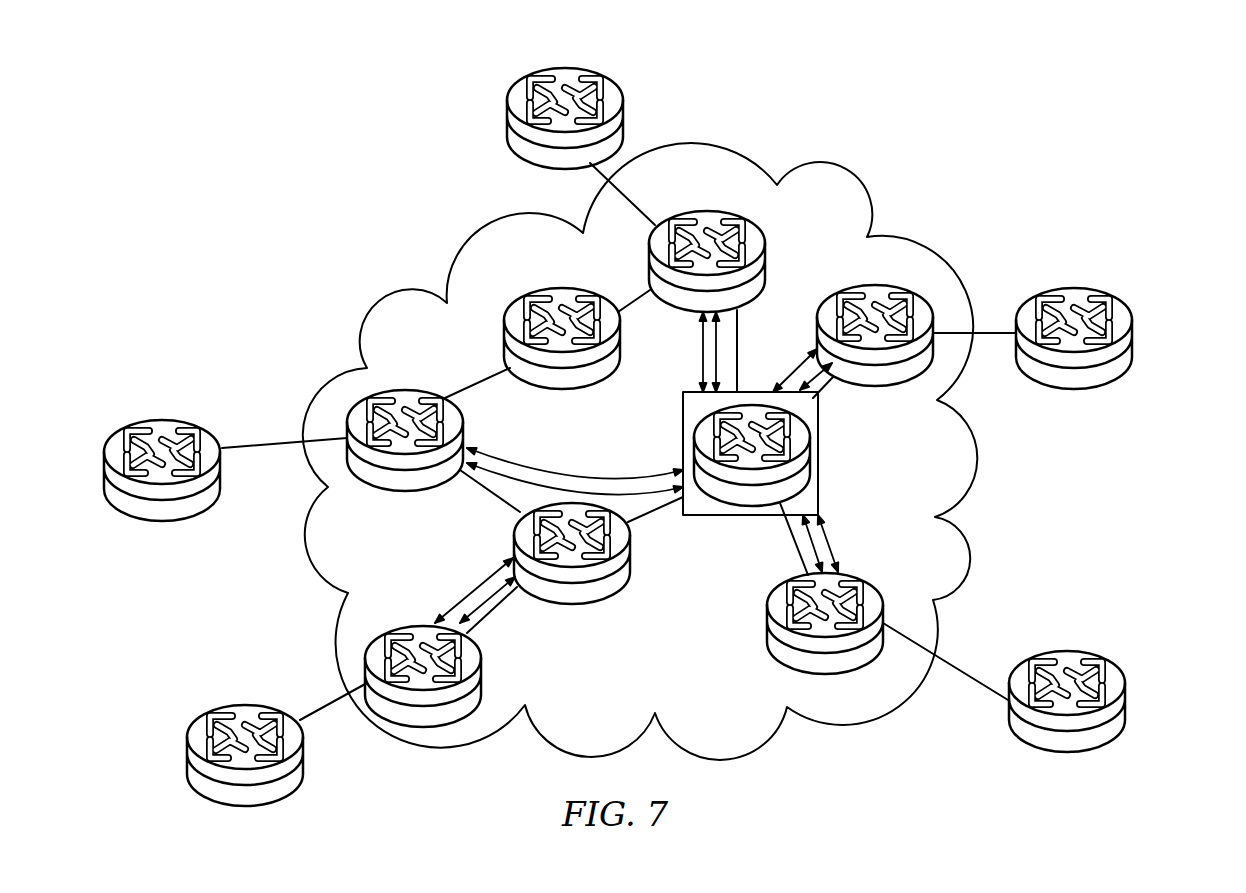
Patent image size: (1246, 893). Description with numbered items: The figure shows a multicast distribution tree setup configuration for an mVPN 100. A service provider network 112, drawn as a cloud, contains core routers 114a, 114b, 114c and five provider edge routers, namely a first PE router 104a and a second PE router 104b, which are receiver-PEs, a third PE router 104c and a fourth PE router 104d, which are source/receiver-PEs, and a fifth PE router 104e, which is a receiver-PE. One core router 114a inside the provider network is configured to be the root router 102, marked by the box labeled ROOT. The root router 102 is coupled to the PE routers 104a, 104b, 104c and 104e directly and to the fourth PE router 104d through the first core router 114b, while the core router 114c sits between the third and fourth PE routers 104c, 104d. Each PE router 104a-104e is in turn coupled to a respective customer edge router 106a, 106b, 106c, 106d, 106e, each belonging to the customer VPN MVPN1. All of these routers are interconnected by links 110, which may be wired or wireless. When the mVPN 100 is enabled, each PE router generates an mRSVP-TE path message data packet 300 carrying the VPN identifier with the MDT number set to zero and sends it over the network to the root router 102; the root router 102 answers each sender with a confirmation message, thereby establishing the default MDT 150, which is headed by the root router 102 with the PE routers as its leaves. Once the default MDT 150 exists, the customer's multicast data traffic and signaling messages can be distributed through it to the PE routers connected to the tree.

The mVPN 100 is at (302, 172).
The root router 102 is at (672, 417).
The first PE router 104a is at (768, 603).
The second PE router 104b is at (935, 300).
The third PE router 104c is at (766, 236).
The fourth PE router 104d is at (405, 388).
The fifth PE router 104e is at (484, 662).
The CE router 106a is at (1126, 700).
The CE router 106b is at (1134, 330).
The CE router 106c is at (505, 108).
The CE router 106d is at (104, 462).
The CE router 106e is at (188, 745).
The link 110 is at (596, 170).
The service provider network 112 is at (672, 658).
The core router 114a is at (812, 452).
The first core router 114b is at (560, 604).
The core router 114c is at (548, 285).
The default MDT 150 is at (701, 350).
The mRSVP-TE path message data packet 300 is at (870, 552).